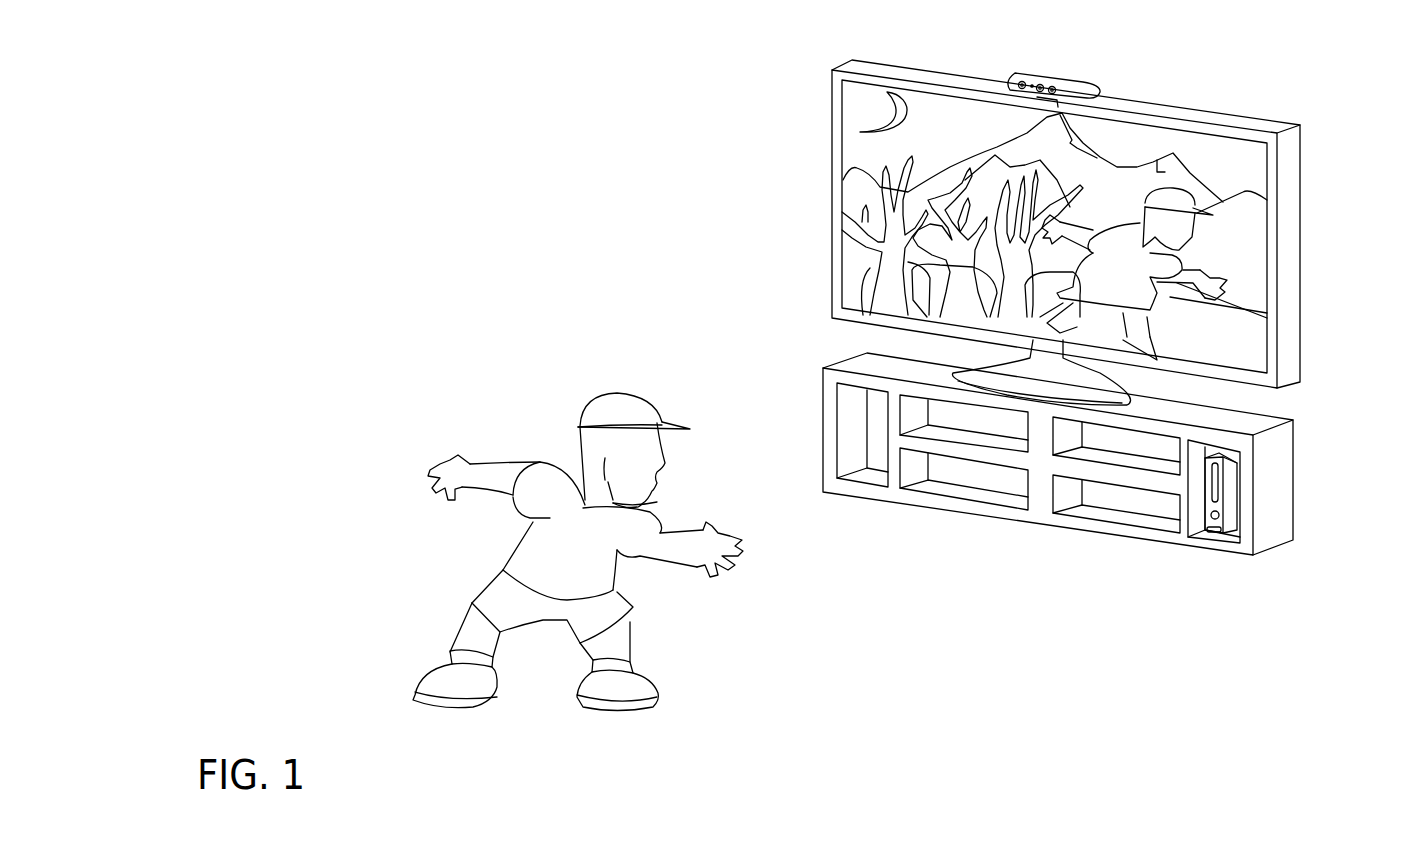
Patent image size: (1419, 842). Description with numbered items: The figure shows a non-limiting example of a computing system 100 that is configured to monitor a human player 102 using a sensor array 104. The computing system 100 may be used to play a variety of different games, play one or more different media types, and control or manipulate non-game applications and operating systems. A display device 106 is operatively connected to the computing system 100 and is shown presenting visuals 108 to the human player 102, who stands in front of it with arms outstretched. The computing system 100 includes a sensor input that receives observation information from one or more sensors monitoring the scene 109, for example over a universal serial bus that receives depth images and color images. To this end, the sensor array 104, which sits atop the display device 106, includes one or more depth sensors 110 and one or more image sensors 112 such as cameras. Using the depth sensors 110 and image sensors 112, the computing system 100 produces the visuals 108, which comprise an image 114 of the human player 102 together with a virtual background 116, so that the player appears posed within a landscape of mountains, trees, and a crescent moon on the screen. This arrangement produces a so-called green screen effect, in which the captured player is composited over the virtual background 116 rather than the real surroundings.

The computing system 100 is at (1237, 540).
The human player 102 is at (625, 372).
The sensor array 104 is at (1103, 90).
The display device 106 is at (830, 90).
The visuals 108 is at (1267, 170).
The scene 109 is at (365, 158).
The depth sensor 110 is at (1042, 77).
The image sensor 112 is at (1057, 78).
The image of human player 114 is at (1173, 203).
The virtual background 116 is at (1240, 247).